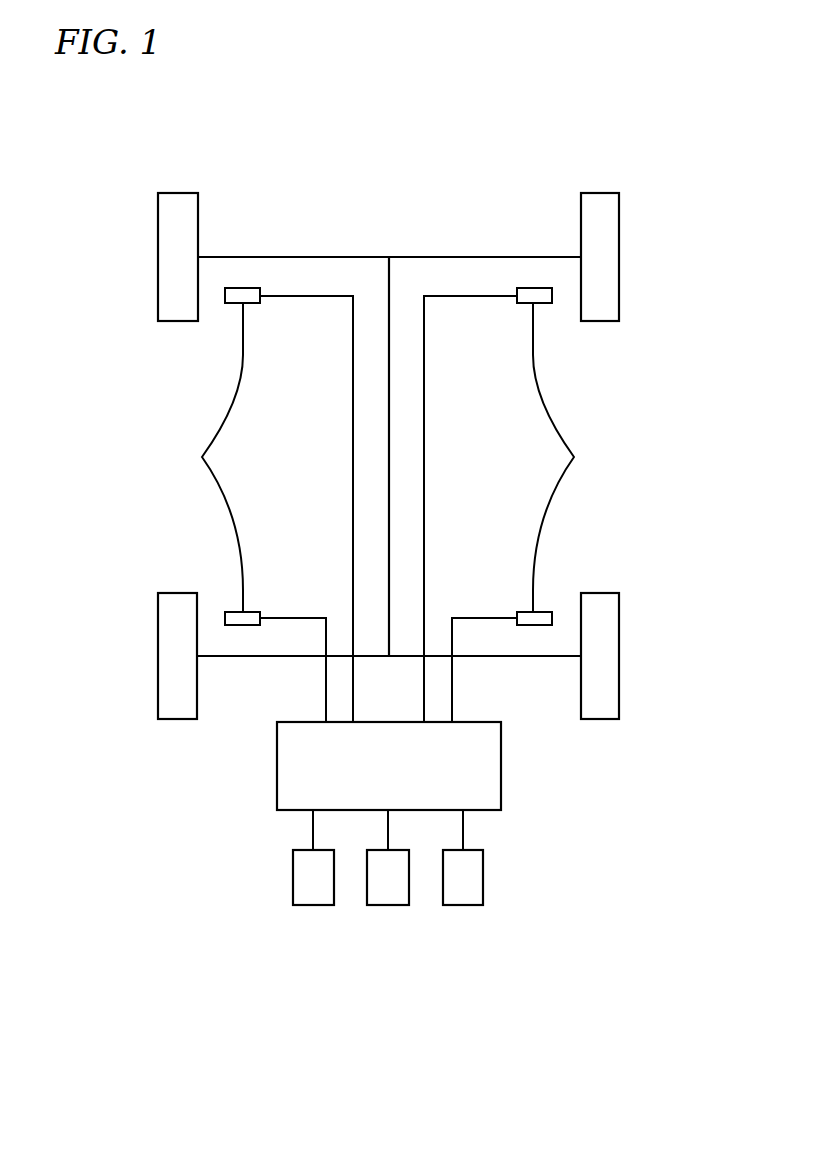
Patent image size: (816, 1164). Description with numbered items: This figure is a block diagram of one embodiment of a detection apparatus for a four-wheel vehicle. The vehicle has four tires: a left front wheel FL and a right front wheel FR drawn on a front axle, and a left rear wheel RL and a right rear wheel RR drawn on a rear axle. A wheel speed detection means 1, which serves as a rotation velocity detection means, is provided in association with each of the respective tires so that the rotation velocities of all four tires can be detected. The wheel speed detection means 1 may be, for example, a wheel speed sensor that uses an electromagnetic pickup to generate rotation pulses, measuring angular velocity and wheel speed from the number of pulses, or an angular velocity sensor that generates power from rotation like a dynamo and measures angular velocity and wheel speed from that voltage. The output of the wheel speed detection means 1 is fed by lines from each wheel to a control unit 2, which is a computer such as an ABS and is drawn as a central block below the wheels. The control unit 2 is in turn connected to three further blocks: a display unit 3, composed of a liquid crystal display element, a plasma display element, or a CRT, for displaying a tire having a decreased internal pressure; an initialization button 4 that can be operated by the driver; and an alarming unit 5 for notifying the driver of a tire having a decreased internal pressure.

The left front wheel FL is at (158, 241).
The right front wheel FR is at (620, 239).
The left rear wheel RL is at (158, 641).
The right rear wheel RR is at (620, 638).
The wheel speed detection means 1 is at (387, 457).
The control unit 2 is at (501, 770).
The display unit 3 is at (313, 905).
The initialization button 4 is at (388, 905).
The alarming unit 5 is at (463, 905).